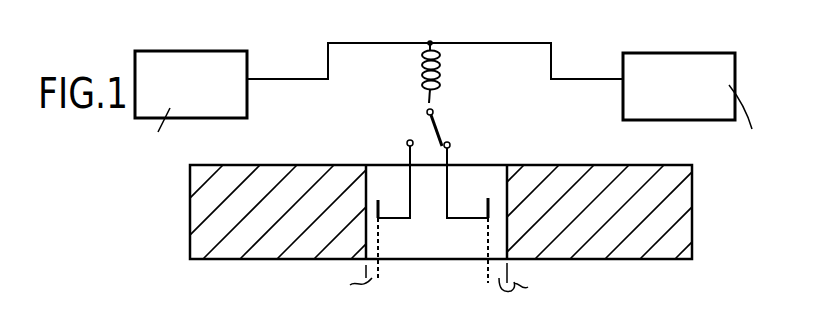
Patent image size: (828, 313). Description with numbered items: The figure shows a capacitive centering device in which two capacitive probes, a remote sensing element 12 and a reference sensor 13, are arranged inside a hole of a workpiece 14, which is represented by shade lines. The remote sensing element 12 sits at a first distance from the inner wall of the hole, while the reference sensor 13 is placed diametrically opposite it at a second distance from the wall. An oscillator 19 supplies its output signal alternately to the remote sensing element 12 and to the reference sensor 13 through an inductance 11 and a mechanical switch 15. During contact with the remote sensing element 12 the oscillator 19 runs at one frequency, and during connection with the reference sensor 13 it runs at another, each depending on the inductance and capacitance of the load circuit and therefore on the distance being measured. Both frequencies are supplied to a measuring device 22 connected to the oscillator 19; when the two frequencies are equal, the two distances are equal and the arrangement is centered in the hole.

The inductance 11 is at (438, 83).
The remote sensing element 12 is at (380, 226).
The reference sensor 13 is at (485, 228).
The workpiece 14 is at (254, 194).
The mechanical switch 15 is at (440, 130).
The oscillator 19 is at (237, 110).
The measuring device 22 is at (628, 109).